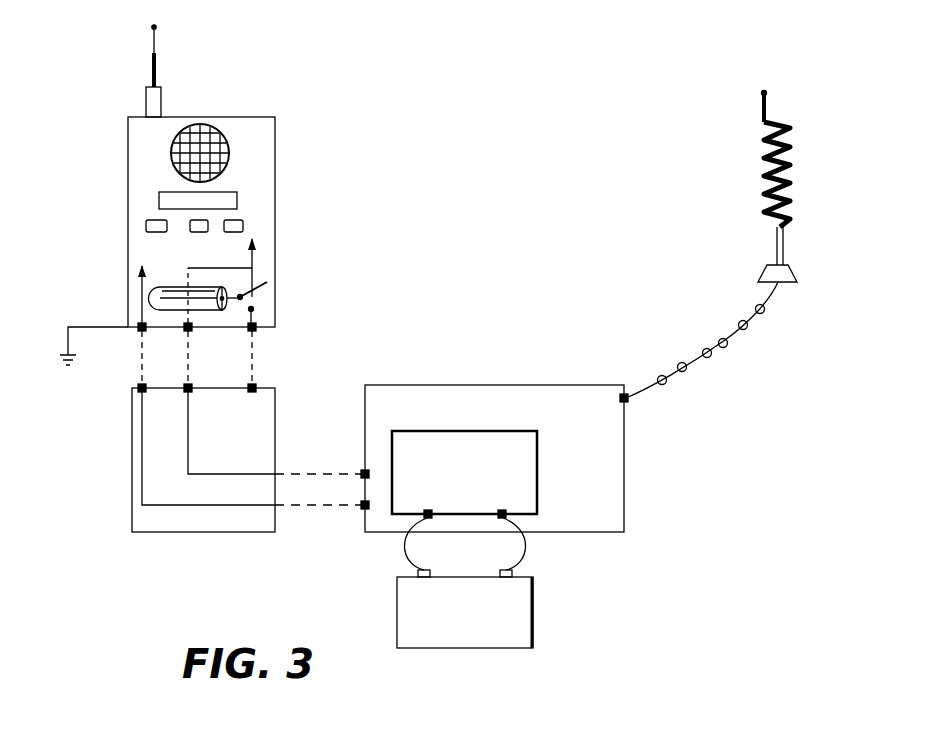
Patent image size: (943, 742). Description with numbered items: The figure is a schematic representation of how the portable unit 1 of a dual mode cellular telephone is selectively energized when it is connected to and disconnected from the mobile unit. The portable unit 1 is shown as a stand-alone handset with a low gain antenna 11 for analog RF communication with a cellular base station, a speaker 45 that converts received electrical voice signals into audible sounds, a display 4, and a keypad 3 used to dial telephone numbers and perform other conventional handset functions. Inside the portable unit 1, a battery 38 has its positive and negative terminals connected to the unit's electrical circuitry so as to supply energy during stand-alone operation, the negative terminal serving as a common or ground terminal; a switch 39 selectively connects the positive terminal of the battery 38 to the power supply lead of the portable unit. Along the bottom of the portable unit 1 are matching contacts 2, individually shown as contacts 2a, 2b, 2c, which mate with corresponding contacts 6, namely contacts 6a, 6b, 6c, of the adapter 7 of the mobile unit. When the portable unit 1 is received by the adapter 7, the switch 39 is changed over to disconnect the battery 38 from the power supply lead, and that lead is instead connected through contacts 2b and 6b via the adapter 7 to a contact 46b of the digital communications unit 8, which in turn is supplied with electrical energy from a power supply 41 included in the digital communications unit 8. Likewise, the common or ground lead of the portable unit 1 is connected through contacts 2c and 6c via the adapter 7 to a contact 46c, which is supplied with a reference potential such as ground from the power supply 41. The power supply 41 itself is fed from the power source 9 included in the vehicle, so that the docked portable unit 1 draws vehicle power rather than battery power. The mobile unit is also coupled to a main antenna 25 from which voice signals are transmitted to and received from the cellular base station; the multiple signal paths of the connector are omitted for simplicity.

The portable unit 1 is at (98, 148).
The low gain antenna 11 is at (158, 76).
The speaker 45 is at (172, 160).
The display 4 is at (237, 201).
The keypad 3 is at (254, 226).
The battery 38 is at (160, 286).
The switch 39 is at (261, 302).
The contacts 2 is at (227, 333).
The contact 2a is at (256, 332).
The contact 2b is at (191, 332).
The contact 2c is at (138, 332).
The contacts 6 is at (221, 387).
The contact 6a is at (257, 384).
The contact 6b is at (195, 387).
The contact 6c is at (138, 385).
The adapter 7 is at (132, 532).
The digital communications unit 8 is at (487, 469).
The power supply 41 is at (539, 486).
The contact 46b is at (362, 472).
The contact 46c is at (363, 508).
The power source 9 is at (532, 624).
The main antenna 25 is at (786, 194).